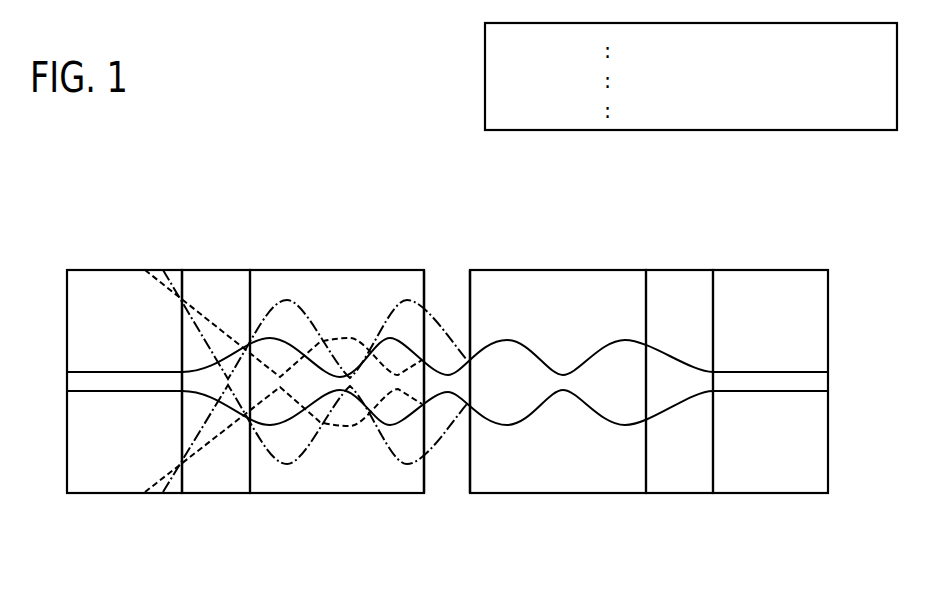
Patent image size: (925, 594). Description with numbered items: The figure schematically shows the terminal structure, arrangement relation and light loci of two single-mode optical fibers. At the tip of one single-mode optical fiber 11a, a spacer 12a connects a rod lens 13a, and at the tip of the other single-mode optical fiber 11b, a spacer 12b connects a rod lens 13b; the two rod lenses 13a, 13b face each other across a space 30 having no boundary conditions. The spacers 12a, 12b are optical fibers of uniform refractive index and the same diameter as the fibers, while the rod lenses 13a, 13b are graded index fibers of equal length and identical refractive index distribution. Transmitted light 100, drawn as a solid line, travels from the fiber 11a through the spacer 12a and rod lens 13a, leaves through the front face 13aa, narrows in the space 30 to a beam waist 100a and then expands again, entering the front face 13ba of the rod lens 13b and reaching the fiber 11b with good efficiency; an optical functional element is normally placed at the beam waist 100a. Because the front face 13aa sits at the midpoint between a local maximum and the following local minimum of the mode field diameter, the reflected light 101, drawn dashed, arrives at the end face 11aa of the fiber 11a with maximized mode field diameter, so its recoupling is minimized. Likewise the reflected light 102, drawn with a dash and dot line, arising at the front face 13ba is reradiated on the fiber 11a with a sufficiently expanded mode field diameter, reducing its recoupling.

The single-mode optical fiber 11a is at (120, 270).
The spacer 12a is at (220, 270).
The rod lens 13a is at (342, 270).
The end face of single-mode optical fiber 11aa is at (182, 462).
The front face of rod lens 13aa is at (427, 290).
The space 30 is at (453, 298).
The front face of rod lens 13ba is at (470, 468).
The rod lens 13b is at (540, 493).
The spacer 12b is at (673, 493).
The single-mode optical fiber 11b is at (765, 493).
The transmitted light 100 is at (476, 297).
The beam waist 100a is at (447, 388).
The reflected light 101 is at (498, 80).
The reflected light 102 is at (498, 110).